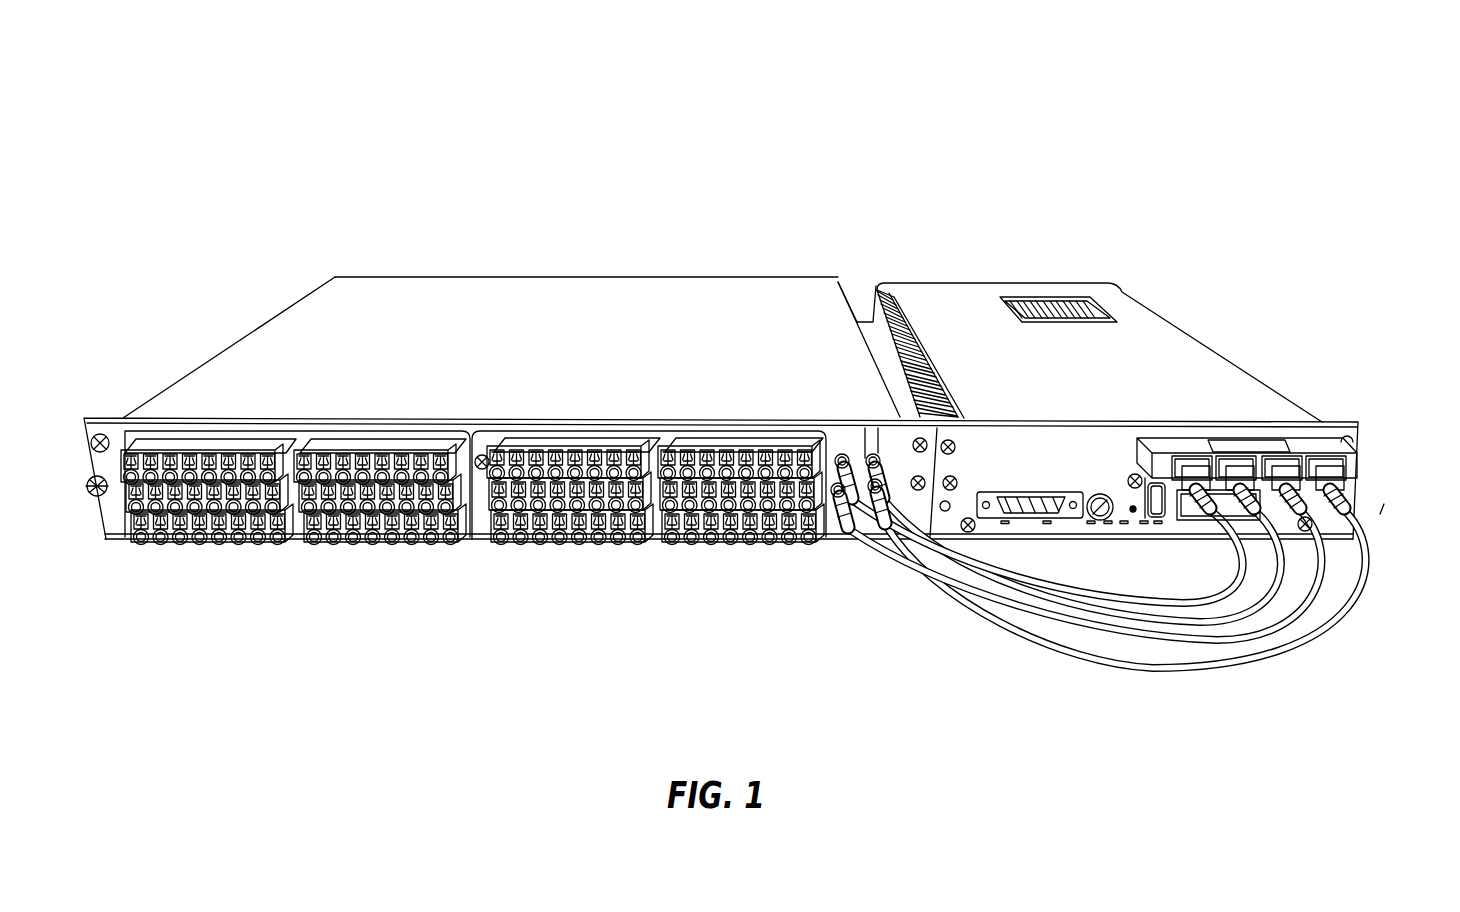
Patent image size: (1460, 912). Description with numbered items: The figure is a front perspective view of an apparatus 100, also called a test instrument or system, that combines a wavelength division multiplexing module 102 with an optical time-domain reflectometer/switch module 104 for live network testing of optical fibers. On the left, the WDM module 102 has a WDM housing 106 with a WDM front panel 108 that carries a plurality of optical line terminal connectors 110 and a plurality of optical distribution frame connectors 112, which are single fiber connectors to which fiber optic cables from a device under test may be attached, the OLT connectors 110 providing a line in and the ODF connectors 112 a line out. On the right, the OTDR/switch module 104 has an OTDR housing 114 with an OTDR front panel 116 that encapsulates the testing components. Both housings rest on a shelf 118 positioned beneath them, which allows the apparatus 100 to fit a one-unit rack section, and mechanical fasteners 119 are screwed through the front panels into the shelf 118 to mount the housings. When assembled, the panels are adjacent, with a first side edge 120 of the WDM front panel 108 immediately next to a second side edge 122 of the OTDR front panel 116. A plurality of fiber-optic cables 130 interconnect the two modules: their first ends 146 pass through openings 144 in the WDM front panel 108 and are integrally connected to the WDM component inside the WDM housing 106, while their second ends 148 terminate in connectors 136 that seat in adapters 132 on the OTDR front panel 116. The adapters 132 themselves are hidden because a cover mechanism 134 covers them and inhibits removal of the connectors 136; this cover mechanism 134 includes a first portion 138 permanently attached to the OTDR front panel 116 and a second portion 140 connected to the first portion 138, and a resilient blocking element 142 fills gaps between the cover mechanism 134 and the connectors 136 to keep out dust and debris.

The apparatus 100 is at (670, 52).
The wavelength division multiplexing (WDM) module 102 is at (284, 285).
The optical time-domain reflectometer (OTDR)/switch module 104 is at (992, 283).
The WDM housing 106 is at (503, 277).
The WDM front panel 108 is at (471, 550).
The optical line terminal (OLT) connectors 110 is at (241, 549).
The optical distribution frame (ODF) connectors 112 is at (668, 550).
The OTDR housing 114 is at (1047, 285).
The OTDR front panel 116 is at (1112, 420).
The shelf 118 is at (858, 320).
The mechanical fasteners 119 is at (947, 440).
The first side edge 120 is at (932, 512).
The second side edge 122 is at (936, 512).
The cables 130 is at (1113, 660).
The adapters 132 is at (1137, 512).
The cover mechanism 134 is at (1307, 442).
The connectors 136 is at (1353, 467).
The first portion 138 is at (1180, 440).
The second portion 140 is at (1200, 450).
The blocking element 142 is at (1177, 503).
The openings 144 is at (843, 454).
The first ends 146 is at (843, 533).
The second ends 148 is at (1367, 498).